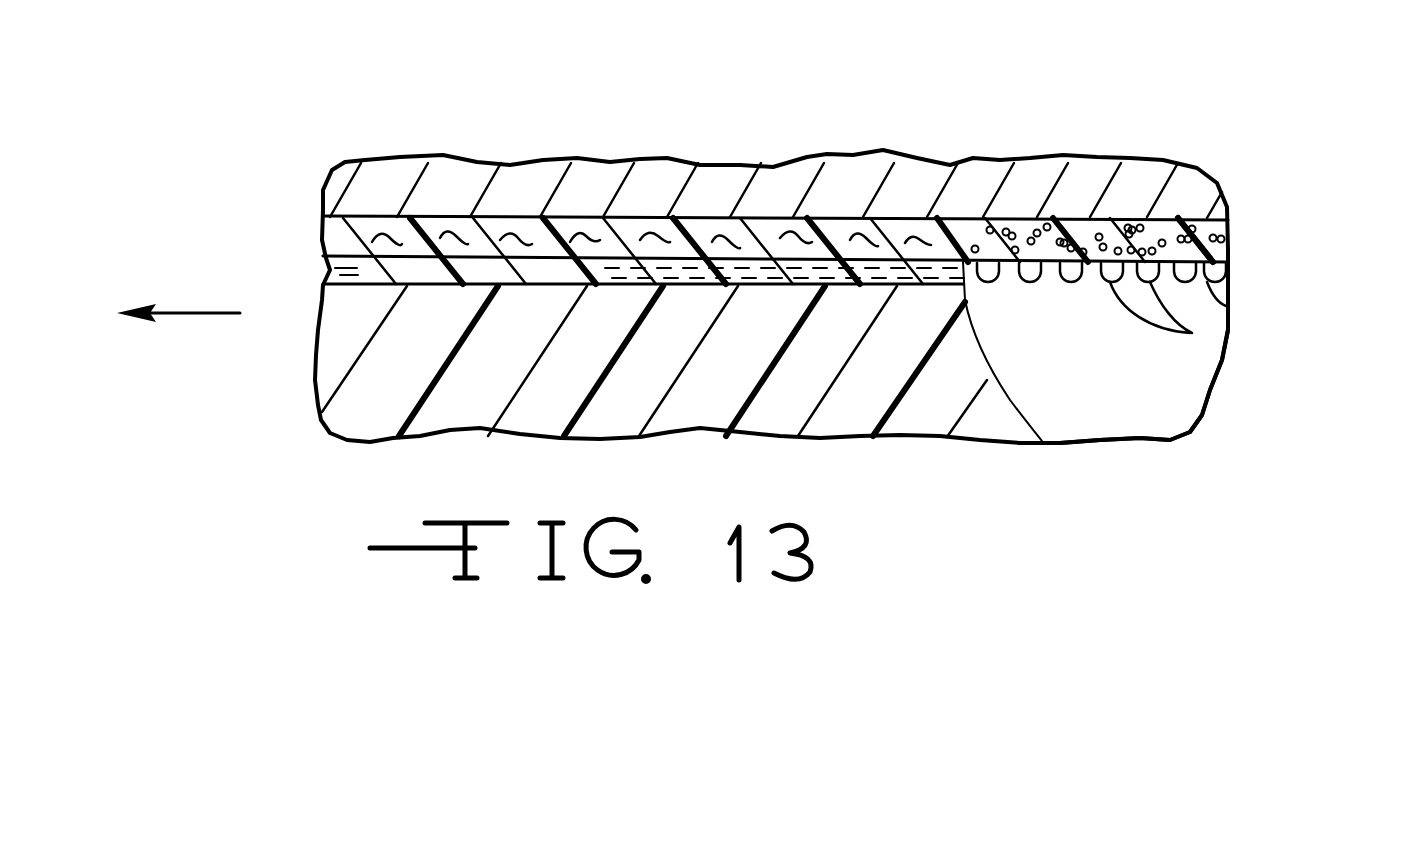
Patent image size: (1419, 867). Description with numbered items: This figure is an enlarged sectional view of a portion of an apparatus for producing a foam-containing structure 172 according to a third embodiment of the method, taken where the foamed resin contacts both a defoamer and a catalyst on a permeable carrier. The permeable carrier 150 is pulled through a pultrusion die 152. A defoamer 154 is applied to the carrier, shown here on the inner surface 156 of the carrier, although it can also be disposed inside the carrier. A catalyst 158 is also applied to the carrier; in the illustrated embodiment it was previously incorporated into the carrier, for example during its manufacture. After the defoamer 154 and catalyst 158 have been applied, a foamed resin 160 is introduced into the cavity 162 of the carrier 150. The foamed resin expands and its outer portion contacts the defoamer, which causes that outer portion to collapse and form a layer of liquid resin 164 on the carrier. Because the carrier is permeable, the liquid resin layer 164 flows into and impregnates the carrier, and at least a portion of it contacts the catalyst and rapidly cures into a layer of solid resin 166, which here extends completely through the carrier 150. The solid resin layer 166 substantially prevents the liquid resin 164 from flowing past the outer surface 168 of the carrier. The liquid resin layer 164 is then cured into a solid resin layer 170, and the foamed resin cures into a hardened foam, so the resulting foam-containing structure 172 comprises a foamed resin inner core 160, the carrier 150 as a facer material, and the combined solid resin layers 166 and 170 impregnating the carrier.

The permeable carrier 150 is at (1228, 244).
The pultrusion die 152 is at (1137, 172).
The defoamer 154 is at (1190, 333).
The inner surface 156 is at (1226, 306).
The catalyst 158 is at (1027, 232).
The foamed resin 160 is at (925, 408).
The cavity 162 is at (1158, 407).
The layer of liquid resin 164 is at (950, 338).
The layer of solid resin 166 is at (862, 245).
The outer surface 168 is at (1228, 243).
The solid resin layer 170 is at (328, 267).
The foam-containing structure 172 is at (308, 342).